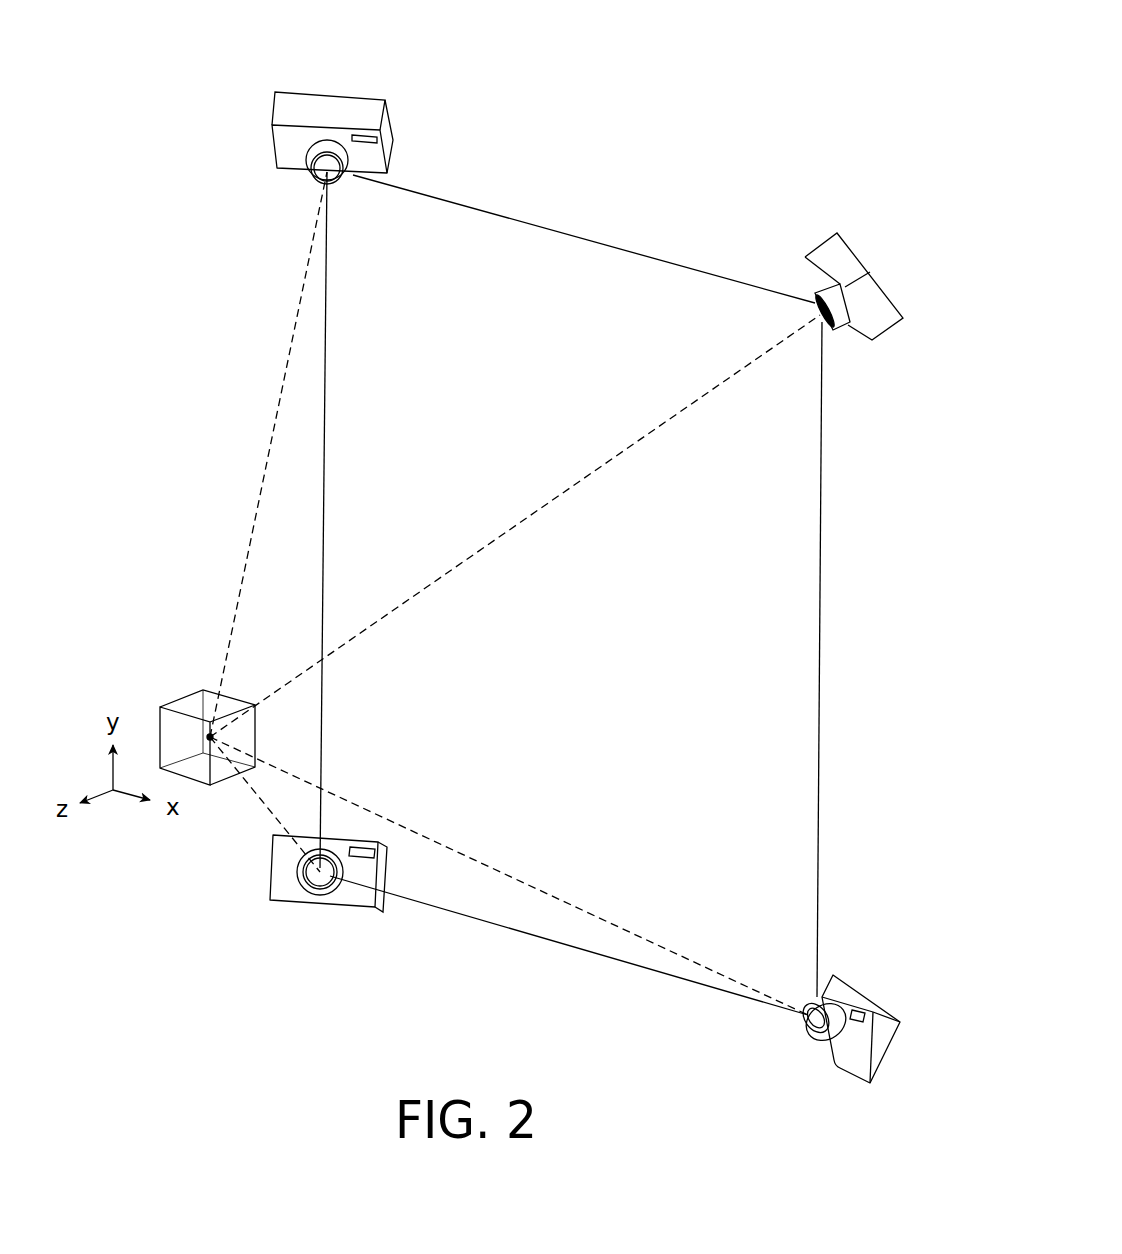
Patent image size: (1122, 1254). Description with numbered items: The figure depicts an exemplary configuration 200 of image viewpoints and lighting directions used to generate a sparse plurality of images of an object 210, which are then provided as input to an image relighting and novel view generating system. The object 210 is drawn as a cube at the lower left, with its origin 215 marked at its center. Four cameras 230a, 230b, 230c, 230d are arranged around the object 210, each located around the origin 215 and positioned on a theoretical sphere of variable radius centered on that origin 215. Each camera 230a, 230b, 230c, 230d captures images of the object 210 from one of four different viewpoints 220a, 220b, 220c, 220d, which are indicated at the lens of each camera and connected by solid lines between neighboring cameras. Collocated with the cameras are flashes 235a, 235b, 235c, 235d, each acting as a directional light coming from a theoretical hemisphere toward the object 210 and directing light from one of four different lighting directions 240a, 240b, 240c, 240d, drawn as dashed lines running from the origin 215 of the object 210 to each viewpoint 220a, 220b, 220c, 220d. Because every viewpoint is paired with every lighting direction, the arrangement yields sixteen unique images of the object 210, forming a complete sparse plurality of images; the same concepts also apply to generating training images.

The exemplary configuration 200 is at (856, 96).
The object 210 is at (195, 688).
The origin 215 is at (202, 738).
The viewpoint 220a is at (312, 175).
The viewpoint 220b is at (803, 299).
The viewpoint 220c is at (300, 872).
The viewpoint 220d is at (804, 1018).
The camera 230a is at (329, 133).
The camera 230b is at (865, 278).
The camera 230c is at (347, 892).
The camera 230d is at (859, 999).
The flash 235a is at (372, 143).
The flash 235b is at (852, 292).
The flash 235c is at (385, 856).
The flash 235d is at (856, 1006).
The lighting direction 240a is at (280, 389).
The lighting direction 240b is at (630, 446).
The lighting direction 240c is at (270, 820).
The lighting direction 240d is at (540, 890).